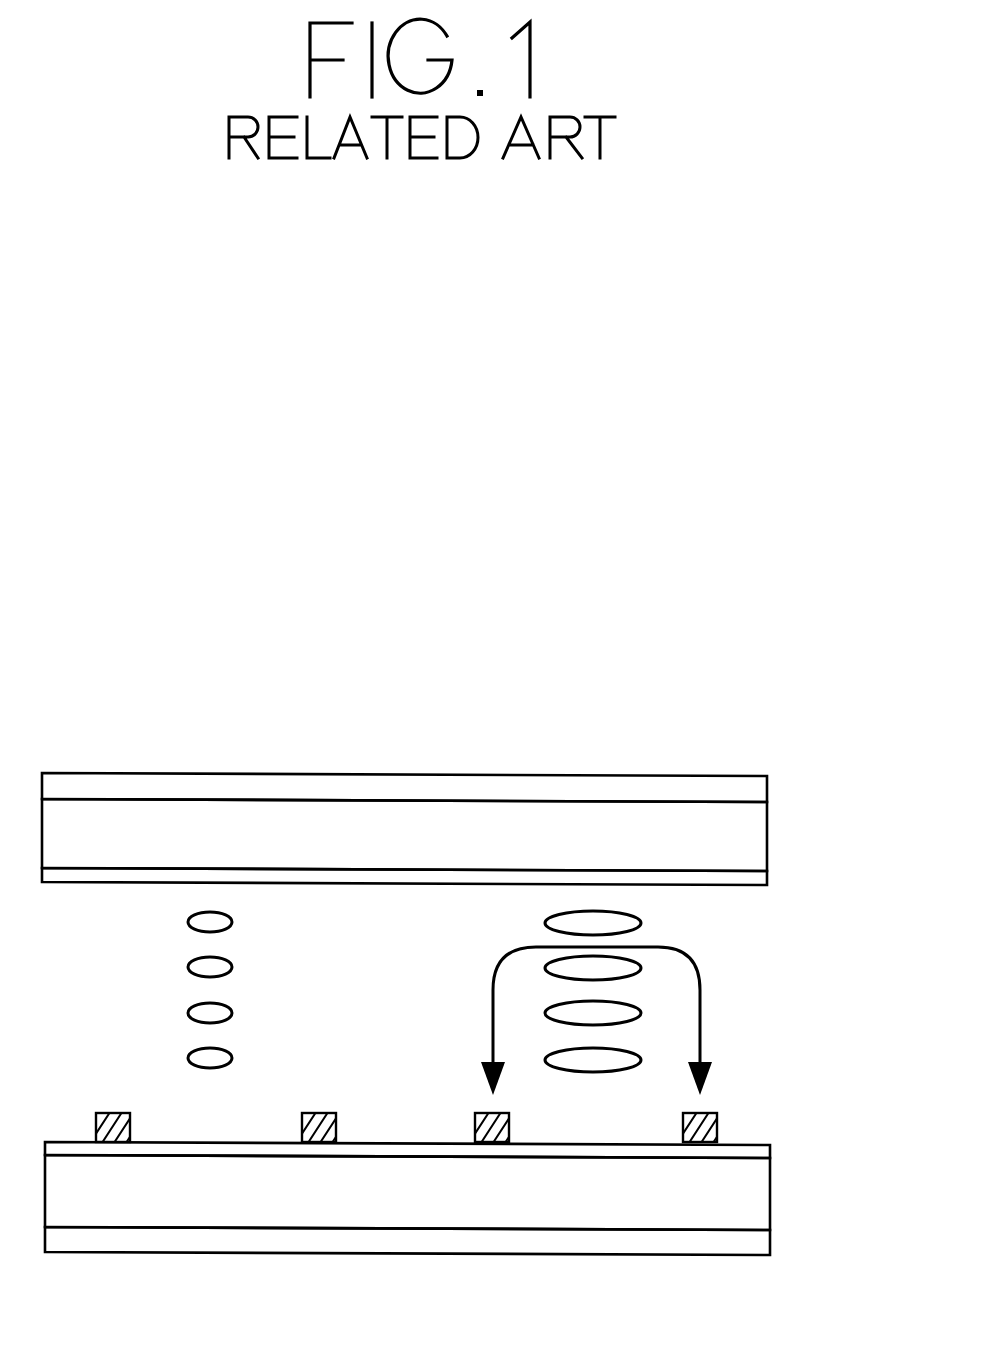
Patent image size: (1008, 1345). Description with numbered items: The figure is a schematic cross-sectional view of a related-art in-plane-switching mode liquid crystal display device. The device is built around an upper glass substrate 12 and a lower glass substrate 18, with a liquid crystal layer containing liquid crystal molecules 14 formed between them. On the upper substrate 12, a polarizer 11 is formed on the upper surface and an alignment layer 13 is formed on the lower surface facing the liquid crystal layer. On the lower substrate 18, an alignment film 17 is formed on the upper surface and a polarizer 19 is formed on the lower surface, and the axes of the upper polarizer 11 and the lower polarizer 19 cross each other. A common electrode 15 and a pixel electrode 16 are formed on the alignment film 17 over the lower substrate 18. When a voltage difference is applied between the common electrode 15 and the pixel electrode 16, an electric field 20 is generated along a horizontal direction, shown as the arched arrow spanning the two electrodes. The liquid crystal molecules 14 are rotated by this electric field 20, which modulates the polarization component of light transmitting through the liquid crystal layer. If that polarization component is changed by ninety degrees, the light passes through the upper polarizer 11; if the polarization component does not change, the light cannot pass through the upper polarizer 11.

The polarizer 11 is at (767, 786).
The upper glass substrate 12 is at (767, 833).
The alignment layer 13 is at (767, 877).
The liquid crystal molecules 14 is at (641, 921).
The common electrode 15 is at (478, 1128).
The pixel electrode 16 is at (718, 1118).
The alignment film 17 is at (770, 1150).
The lower glass substrate 18 is at (770, 1198).
The polarizer 19 is at (770, 1240).
The electric field 20 is at (492, 996).